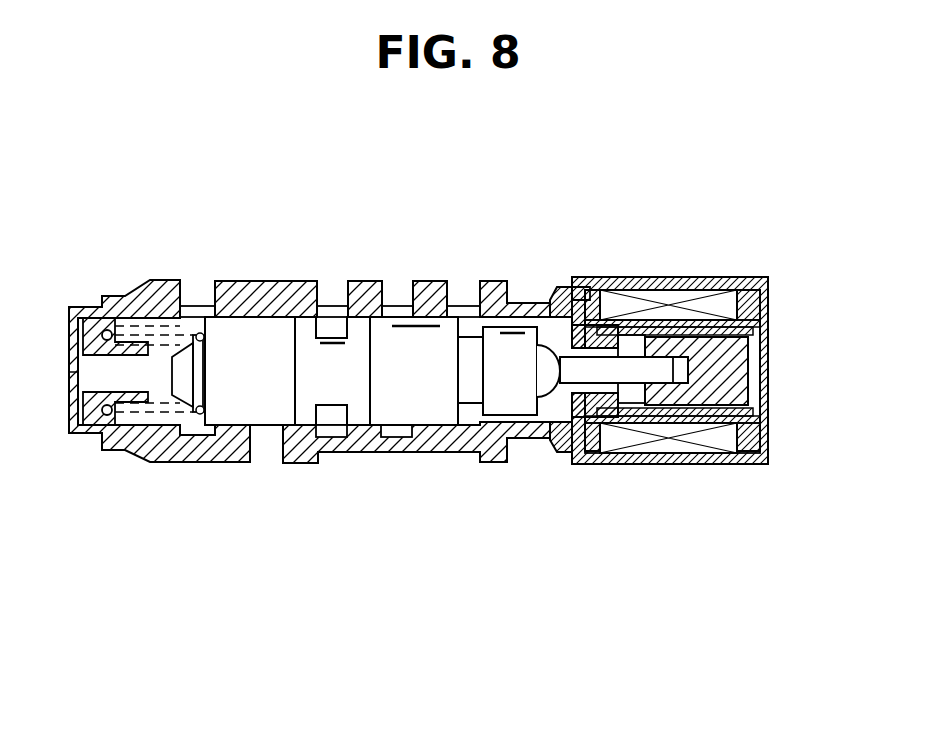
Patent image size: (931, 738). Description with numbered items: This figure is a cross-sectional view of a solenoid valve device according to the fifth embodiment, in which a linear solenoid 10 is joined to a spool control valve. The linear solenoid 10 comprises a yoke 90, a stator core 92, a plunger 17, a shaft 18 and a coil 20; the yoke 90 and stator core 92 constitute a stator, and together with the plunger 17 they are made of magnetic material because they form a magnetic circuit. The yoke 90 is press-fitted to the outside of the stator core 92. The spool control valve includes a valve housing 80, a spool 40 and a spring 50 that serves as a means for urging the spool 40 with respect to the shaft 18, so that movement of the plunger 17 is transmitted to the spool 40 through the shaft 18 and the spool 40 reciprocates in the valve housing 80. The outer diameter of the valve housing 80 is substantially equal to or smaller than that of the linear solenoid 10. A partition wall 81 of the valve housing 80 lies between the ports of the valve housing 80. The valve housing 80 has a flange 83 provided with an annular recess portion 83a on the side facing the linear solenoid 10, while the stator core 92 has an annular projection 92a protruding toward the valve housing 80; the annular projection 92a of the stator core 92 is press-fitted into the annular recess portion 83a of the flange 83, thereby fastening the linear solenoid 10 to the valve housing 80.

The linear solenoid 10 is at (696, 358).
The plunger 17 is at (735, 375).
The shaft 18 is at (650, 368).
The coil 20 is at (708, 445).
The spool 40 is at (265, 434).
The spring 50 is at (148, 405).
The valve housing 80 is at (270, 281).
The partition wall of sleeve 81 is at (366, 281).
The flange 83 is at (563, 287).
The annular recess portion 83a is at (600, 287).
The yoke 90 is at (745, 278).
The stator core 92 is at (614, 425).
The annular projection 92a is at (552, 455).